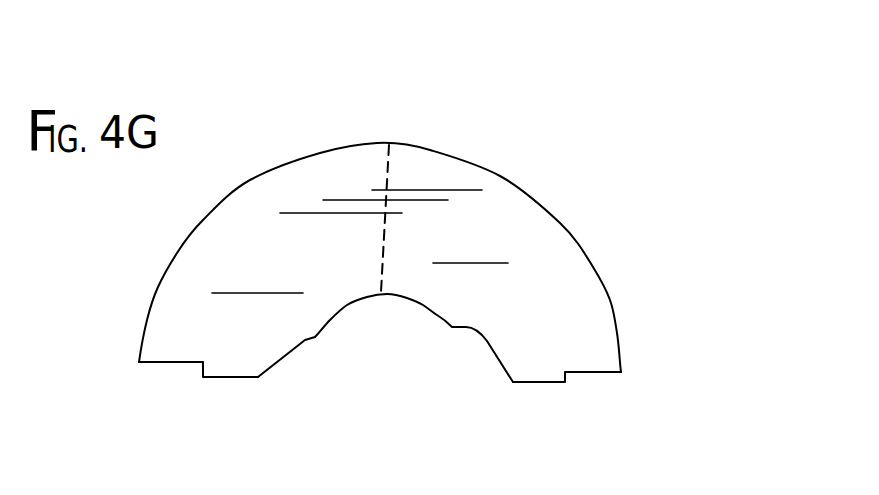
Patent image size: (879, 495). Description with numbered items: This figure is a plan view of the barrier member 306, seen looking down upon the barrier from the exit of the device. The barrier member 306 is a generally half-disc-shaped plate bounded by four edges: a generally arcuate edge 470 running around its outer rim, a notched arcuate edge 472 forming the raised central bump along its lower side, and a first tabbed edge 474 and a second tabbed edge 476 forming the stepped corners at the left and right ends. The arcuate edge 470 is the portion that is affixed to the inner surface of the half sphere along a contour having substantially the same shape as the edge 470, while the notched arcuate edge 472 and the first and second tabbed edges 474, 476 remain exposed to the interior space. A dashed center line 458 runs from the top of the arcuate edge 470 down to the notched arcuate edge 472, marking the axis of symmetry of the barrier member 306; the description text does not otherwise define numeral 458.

The barrier member 306 is at (765, 302).
The center line / axis 458 is at (390, 167).
The arcuate edge 470 is at (321, 152).
The notched arcuate edge 472 is at (422, 297).
The first tabbed edge 474 is at (228, 377).
The second tabbed edge 476 is at (560, 385).